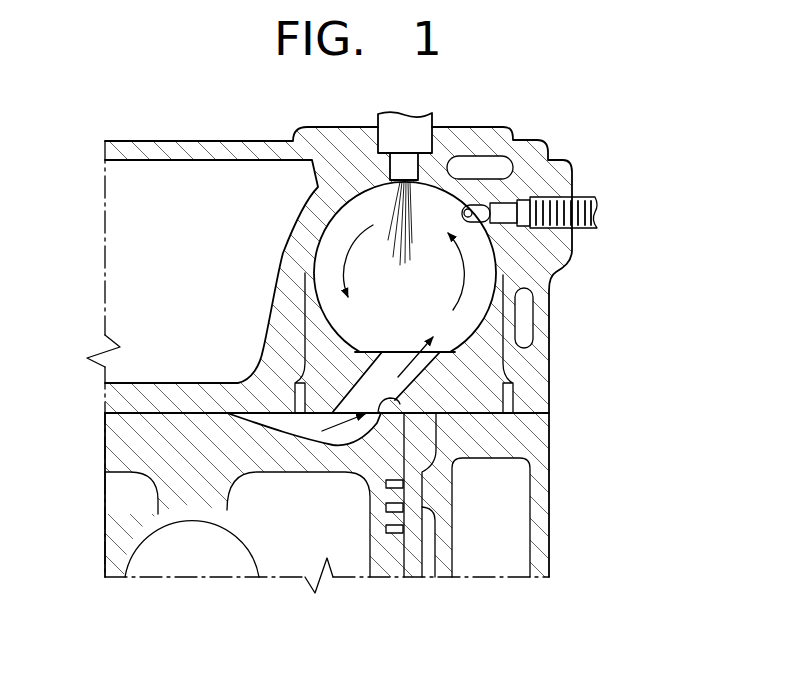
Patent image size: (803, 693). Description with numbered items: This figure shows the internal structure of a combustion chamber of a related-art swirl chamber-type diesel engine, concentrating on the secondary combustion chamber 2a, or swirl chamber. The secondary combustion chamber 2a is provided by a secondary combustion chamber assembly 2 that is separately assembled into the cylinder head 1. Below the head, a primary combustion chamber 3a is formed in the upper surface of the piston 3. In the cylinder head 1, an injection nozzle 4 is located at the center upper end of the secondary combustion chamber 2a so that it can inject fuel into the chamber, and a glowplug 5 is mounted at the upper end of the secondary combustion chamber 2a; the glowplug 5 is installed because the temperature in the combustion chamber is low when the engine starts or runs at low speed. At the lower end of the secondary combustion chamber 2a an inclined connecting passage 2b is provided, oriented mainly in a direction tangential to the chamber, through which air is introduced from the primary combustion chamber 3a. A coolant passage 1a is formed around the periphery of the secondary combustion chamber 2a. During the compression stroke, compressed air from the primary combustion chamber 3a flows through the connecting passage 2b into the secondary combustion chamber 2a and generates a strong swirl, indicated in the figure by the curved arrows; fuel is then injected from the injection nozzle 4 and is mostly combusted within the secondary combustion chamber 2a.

The cylinder head 1 is at (319, 140).
The coolant passage 1a is at (133, 262).
The secondary combustion chamber assembly 2 is at (475, 407).
The secondary combustion chamber 2a is at (433, 315).
The connecting passage 2b is at (383, 408).
The piston 3 is at (384, 543).
The primary combustion chamber 3a is at (295, 418).
The injection nozzle 4 is at (377, 121).
The glowplug 5 is at (551, 206).